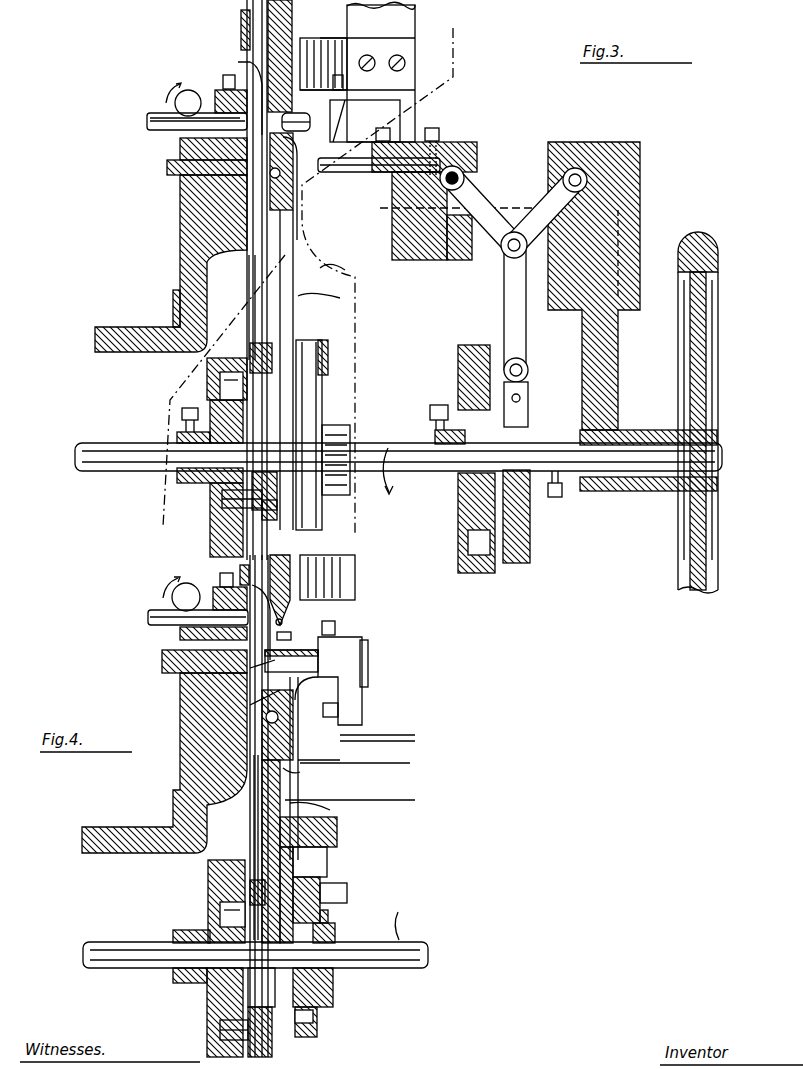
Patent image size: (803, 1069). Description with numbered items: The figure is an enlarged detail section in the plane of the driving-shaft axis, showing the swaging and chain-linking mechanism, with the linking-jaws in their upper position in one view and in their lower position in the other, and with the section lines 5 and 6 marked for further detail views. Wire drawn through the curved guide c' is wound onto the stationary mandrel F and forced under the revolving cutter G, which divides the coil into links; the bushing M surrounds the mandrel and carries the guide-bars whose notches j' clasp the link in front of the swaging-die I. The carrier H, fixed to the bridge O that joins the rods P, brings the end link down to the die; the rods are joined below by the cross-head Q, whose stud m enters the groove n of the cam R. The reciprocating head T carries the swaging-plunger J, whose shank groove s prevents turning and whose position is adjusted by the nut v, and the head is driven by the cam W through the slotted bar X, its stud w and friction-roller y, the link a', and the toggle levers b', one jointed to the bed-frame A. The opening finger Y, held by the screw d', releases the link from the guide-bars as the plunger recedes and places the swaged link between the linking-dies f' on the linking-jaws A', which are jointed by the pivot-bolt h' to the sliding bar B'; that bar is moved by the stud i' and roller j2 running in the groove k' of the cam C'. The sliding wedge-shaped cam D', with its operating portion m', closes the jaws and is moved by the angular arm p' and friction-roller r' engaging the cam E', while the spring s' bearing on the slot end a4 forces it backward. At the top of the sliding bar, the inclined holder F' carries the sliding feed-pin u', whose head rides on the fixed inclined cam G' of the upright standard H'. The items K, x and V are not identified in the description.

In FIG. 3, the upper hatched block K is at (222, 100).
In FIG. 3, the bushing M is at (222, 497).
In FIG. 4, the bushing M is at (213, 635).
In FIG. 3, the stationary mandrel F is at (197, 128).
In FIG. 4, the stationary mandrel F is at (194, 608).
In FIG. 3, the linking-dies f' is at (182, 117).
In FIG. 4, the linking-dies f' is at (233, 680).
In FIG. 3, the revolving cutter G is at (188, 92).
In FIG. 4, the revolving cutter G is at (181, 589).
In FIG. 3, the linking-jaws A' is at (158, 94).
In FIG. 3, the swaging-die I is at (207, 168).
In FIG. 4, the swaging-die I is at (204, 663).
In FIG. 3, the cross-head Q is at (252, 355).
In FIG. 4, the cross-head Q is at (250, 892).
In FIG. 3, the groove n is at (220, 390).
In FIG. 4, the groove n is at (220, 913).
In FIG. 3, the rods P is at (249, 290).
In FIG. 4, the rods P is at (254, 788).
In FIG. 3, the stud I' is at (285, 56).
In FIG. 4, the stud I' is at (286, 590).
In FIG. 3, the sliding bar B' is at (297, 370).
In FIG. 4, the sliding bar B' is at (315, 768).
In FIG. 3, the carrier H is at (202, 93).
In FIG. 4, the carrier H is at (269, 622).
In FIG. 3, the bridge O is at (241, 30).
In FIG. 4, the bridge O is at (240, 569).
In FIG. 3, the curved guide c' is at (303, 188).
In FIG. 3, the stud i' is at (277, 513).
In FIG. 3, the upright standard H' is at (392, 72).
In FIG. 3, the notches J' is at (323, 54).
In FIG. 4, the notches J' is at (327, 571).
In FIG. 3, the sliding feed-pin u' is at (319, 81).
In FIG. 3, the inclined holder F' is at (300, 111).
In FIG. 3, the fixed inclined cam G' is at (365, 120).
In FIG. 3, the opening finger Y is at (342, 122).
In FIG. 4, the opening finger Y is at (290, 655).
In FIG. 3, the screw d' is at (395, 124).
In FIG. 3, the bolt x is at (436, 131).
In FIG. 3, the rod / block V is at (415, 140).
In FIG. 4, the rod / block V is at (348, 648).
In FIG. 3, the reciprocating head T is at (474, 158).
In FIG. 3, the bed-frame A is at (605, 286).
In FIG. 3, the toggle levers b' is at (513, 209).
In FIG. 3, the link a' is at (505, 307).
In FIG. 4, the link a' is at (293, 626).
In FIG. 3, the stud w is at (528, 400).
In FIG. 3, the friction-roller y is at (514, 391).
In FIG. 3, the cam W is at (458, 371).
In FIG. 3, the cam R is at (210, 527).
In FIG. 4, the cam R is at (207, 1007).
In FIG. 3, the cam E' is at (324, 435).
In FIG. 4, the cam E' is at (343, 921).
In FIG. 3, the friction-roller r' is at (334, 351).
In FIG. 4, the friction-roller r' is at (325, 895).
In FIG. 3, the angular arm p' is at (339, 294).
In FIG. 4, the angular arm p' is at (319, 880).
In FIG. 3, the spring s' is at (332, 262).
In FIG. 4, the spring s' is at (310, 796).
In FIG. 3, the slotted bar X is at (530, 528).
In FIG. 3, the swaging-plunger J is at (482, 523).
In FIG. 3, the groove s is at (394, 473).
In FIG. 4, the groove s is at (403, 926).
In FIG. 3, the section line 5 5 is at (387, 295).
In FIG. 3, the section line 6 6 is at (218, 406).
In FIG. 4, the operating portion m' is at (198, 619).
In FIG. 4, the pivot-bolt h' is at (247, 712).
In FIG. 4, the stud m is at (215, 1030).
In FIG. 4, the cam C' is at (324, 1022).
In FIG. 4, the groove k' is at (322, 1009).
In FIG. 4, the nut v is at (307, 688).
In FIG. 4, the end of slot a4 is at (300, 772).
In FIG. 4, the sliding wedge-shaped cam D' is at (247, 847).
In FIG. 4, the roller j2 is at (334, 922).